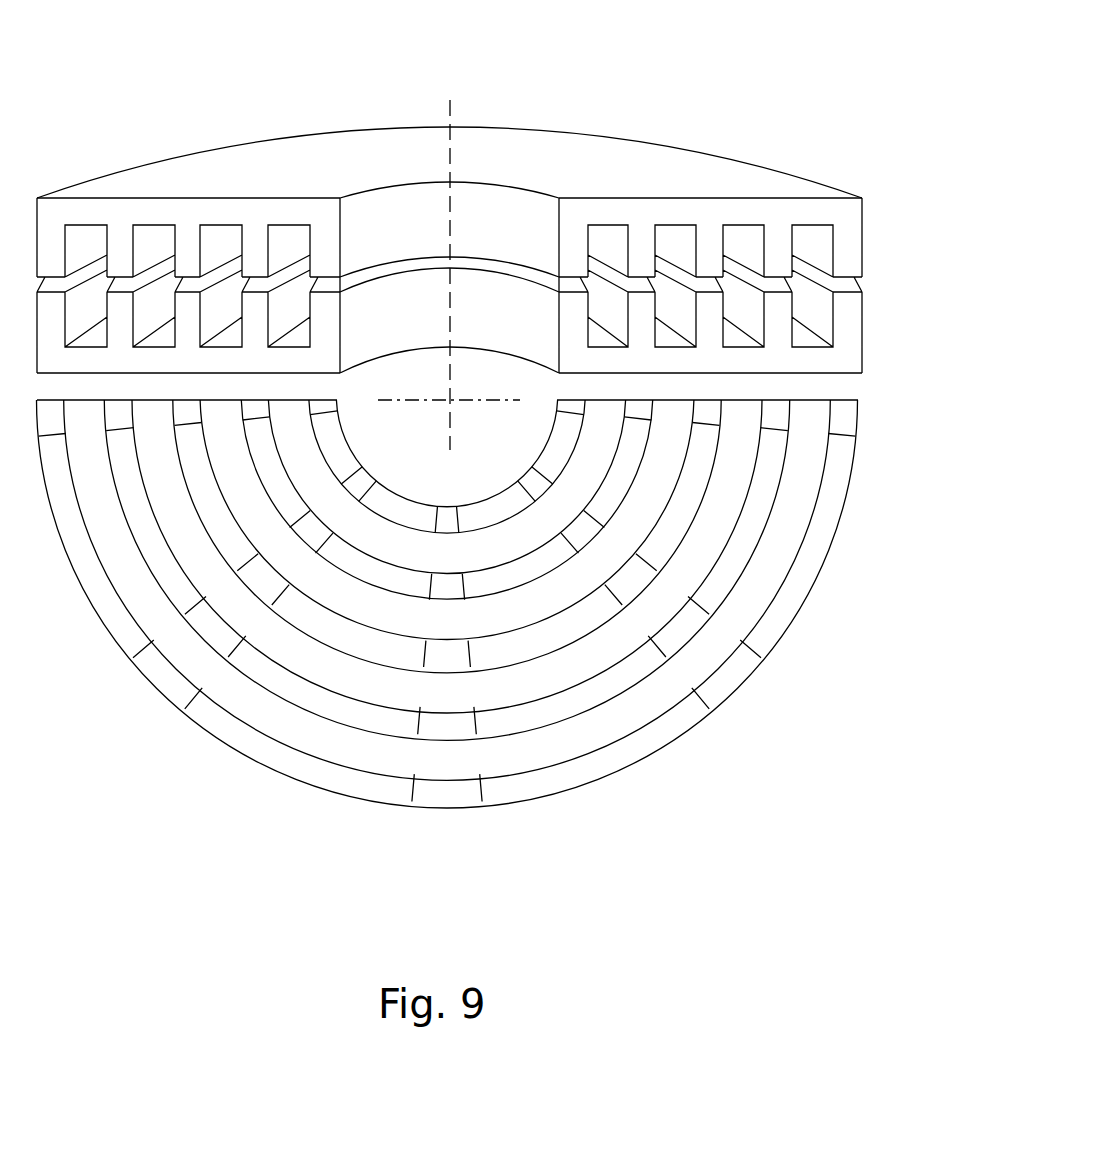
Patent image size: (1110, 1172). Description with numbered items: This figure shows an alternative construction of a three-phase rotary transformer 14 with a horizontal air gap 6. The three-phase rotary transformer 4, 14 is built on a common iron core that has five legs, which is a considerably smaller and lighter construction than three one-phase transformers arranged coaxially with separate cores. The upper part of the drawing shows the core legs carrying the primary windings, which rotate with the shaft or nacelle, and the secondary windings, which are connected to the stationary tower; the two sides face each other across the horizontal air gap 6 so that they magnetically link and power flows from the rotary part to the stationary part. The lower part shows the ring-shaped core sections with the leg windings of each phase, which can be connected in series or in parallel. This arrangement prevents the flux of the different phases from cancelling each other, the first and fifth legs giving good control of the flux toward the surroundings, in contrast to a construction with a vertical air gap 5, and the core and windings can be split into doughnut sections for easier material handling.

The three-phase rotary transformer 14 is at (719, 133).
The three-phase rotary transformer 4 is at (449, 162).
The vertical air gap 5 is at (449, 315).
The horizontal air gap 6 is at (871, 288).